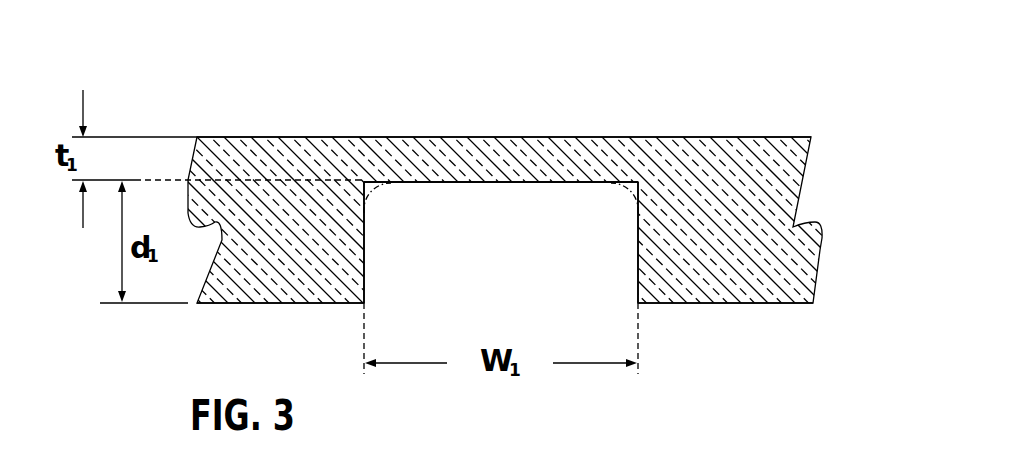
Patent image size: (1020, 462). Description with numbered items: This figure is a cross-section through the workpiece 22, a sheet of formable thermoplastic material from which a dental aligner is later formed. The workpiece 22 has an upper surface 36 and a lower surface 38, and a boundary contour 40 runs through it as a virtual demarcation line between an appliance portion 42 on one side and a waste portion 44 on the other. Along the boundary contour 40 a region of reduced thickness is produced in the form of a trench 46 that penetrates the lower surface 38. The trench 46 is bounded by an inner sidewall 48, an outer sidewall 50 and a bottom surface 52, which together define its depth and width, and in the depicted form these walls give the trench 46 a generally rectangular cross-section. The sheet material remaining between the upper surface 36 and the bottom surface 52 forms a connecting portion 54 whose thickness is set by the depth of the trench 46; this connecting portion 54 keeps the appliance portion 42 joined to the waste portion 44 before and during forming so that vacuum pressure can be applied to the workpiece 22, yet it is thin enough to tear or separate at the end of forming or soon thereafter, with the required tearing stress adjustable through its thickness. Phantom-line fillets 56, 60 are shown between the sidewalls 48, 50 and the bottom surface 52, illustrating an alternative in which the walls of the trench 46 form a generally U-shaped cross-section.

The workpiece 22 is at (716, 62).
The upper surface 36 is at (749, 137).
The lower surface 38 is at (736, 304).
The boundary contour 40 is at (439, 304).
The appliance portion 42 is at (294, 229).
The waste portion 44 is at (728, 219).
The trench 46 is at (537, 233).
The inner sidewall 48 is at (365, 268).
The outer sidewall 50 is at (638, 254).
The bottom surface 52 is at (440, 184).
The connecting portion 54 is at (500, 170).
The fillet 56 is at (380, 190).
The fillet 60 is at (617, 190).